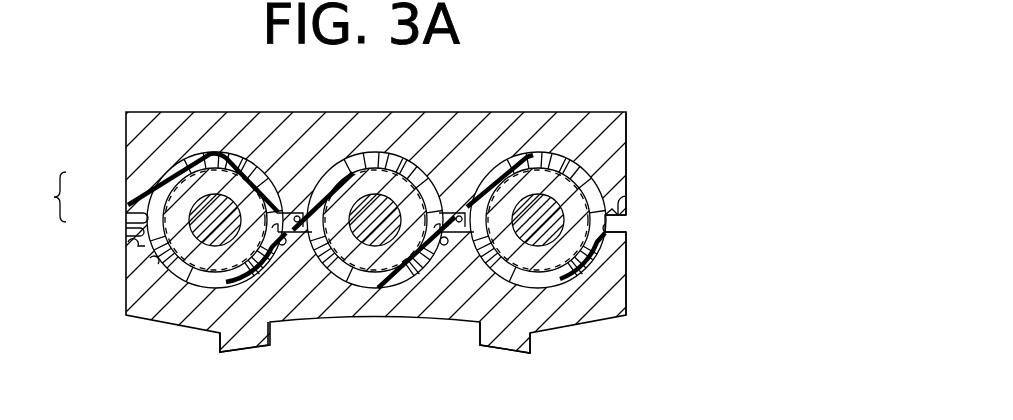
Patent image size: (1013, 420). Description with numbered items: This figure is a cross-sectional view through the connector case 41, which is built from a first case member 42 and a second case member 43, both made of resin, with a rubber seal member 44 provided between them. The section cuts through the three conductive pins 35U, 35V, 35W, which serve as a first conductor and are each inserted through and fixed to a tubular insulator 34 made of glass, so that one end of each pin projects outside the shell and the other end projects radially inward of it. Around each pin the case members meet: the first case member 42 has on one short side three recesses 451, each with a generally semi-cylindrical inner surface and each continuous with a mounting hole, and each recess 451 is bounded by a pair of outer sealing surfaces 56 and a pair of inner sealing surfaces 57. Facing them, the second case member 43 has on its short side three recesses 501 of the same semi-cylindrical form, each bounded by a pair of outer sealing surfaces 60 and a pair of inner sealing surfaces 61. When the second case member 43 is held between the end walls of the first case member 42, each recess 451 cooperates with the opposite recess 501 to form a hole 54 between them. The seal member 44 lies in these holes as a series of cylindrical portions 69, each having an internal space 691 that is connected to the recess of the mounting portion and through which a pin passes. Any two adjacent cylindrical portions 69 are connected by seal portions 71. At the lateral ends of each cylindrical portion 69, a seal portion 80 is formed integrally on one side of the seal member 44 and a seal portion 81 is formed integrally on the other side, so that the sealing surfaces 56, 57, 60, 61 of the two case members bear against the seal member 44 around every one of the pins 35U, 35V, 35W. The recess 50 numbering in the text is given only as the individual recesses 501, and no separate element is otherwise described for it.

The connector case 41 is at (650, 98).
The first case member 42 is at (627, 296).
The second case member 43 is at (627, 138).
The seal member 44 is at (627, 227).
The insulator 34 is at (210, 282).
The conductive pin 35U is at (220, 200).
The conductive pin 35V is at (380, 208).
The conductive pin 35W is at (545, 200).
The bus bar unit 50 is at (434, 122).
The recess 501 is at (251, 160).
The hole 54 is at (46, 197).
The recess 451 is at (160, 196).
The outer sealing surface 56 is at (132, 258).
The inner sealing surface 57 is at (283, 242).
The outer sealing surface 60 is at (137, 228).
The inner sealing surface 61 is at (316, 202).
The cylindrical portion 69 is at (190, 153).
The space 691 is at (158, 175).
The seal portion 71 is at (315, 255).
The seal portion 80 is at (618, 212).
The seal portion 81 is at (135, 243).